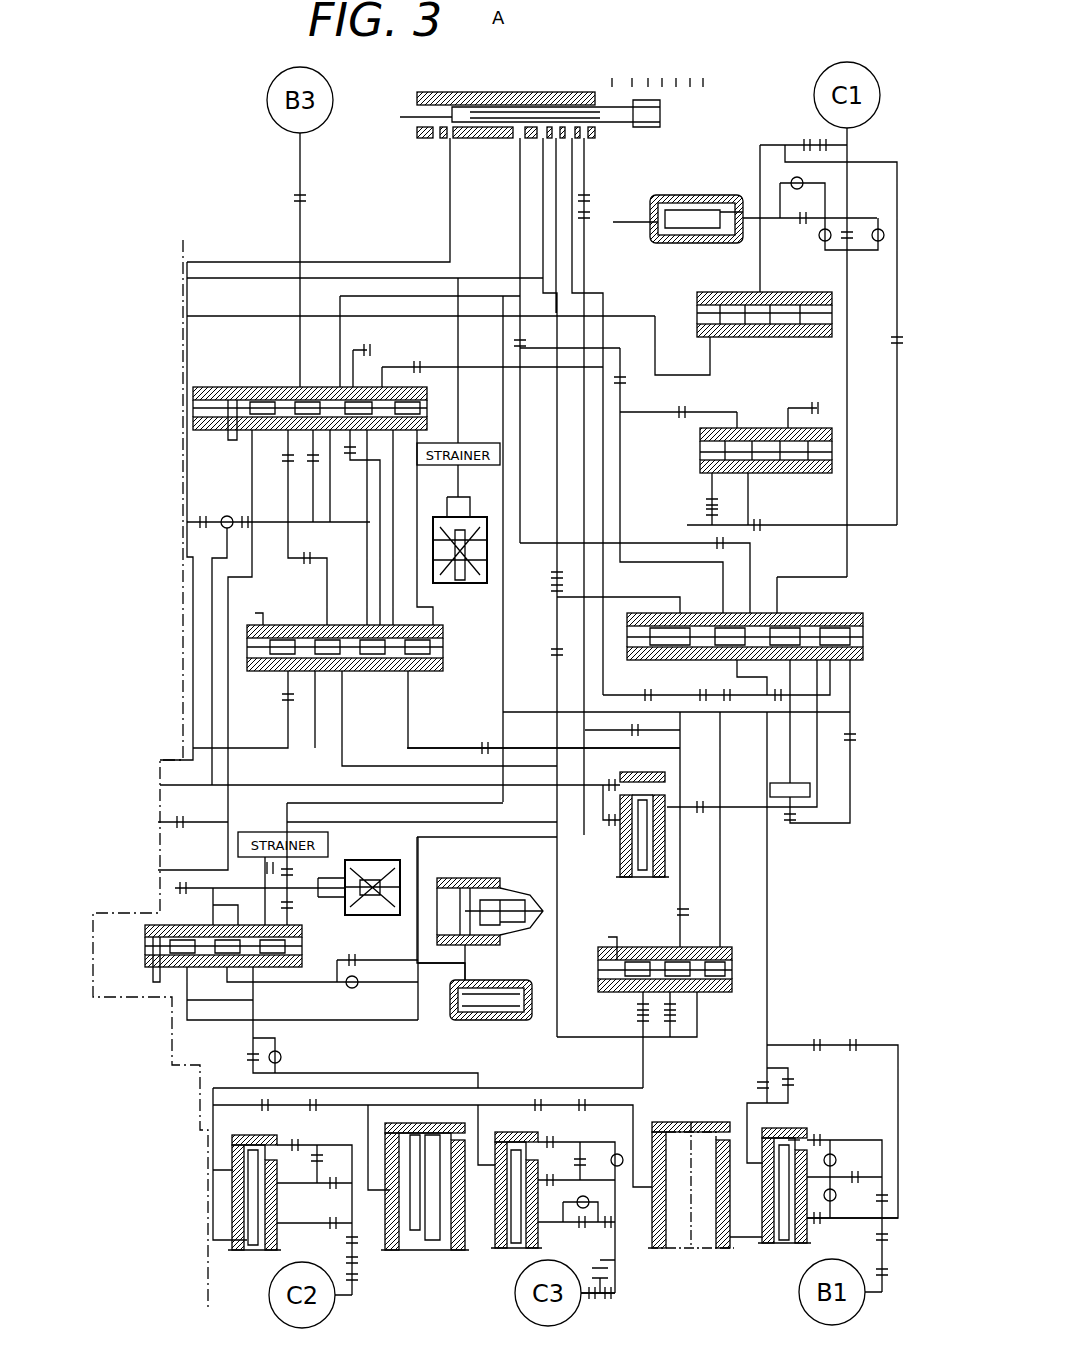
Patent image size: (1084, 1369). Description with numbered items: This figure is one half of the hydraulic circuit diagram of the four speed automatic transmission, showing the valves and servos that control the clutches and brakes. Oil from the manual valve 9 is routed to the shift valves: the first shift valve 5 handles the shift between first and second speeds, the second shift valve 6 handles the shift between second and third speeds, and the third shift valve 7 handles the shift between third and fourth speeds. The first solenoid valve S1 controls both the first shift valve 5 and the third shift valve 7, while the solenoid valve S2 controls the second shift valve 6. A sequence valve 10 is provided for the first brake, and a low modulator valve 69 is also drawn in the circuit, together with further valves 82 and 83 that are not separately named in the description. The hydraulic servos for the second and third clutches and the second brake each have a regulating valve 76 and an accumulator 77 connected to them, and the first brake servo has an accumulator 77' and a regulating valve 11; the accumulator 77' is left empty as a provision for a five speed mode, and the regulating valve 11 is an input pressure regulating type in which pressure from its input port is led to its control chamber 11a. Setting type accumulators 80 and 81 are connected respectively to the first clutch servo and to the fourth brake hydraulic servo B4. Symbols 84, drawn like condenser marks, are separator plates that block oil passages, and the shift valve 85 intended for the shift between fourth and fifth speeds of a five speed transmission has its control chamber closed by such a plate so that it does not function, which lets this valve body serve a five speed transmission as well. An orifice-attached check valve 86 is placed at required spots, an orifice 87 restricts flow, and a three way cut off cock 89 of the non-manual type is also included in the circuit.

The 1-2 shift valve 5 is at (243, 378).
The 2-3 shift valve 6 is at (135, 950).
The 3-4 shift valve 7 is at (297, 613).
The manual valve 9 is at (512, 87).
The sequence valve 10 is at (627, 938).
The regulating valve 11 is at (782, 1257).
The control chamber 11a is at (793, 1130).
The low modulator valve 69 is at (670, 780).
The regulating valve 76 is at (250, 1260).
The accumulator 77 is at (425, 1215).
The accumulator 77' is at (691, 1215).
The setting type accumulator 80 is at (715, 193).
The setting type accumulator 81 is at (503, 1020).
The shift valve 82 is at (803, 338).
The shift valve 83 is at (810, 473).
The separator plate 84 is at (372, 350).
The 4-5 shift valve 85 is at (868, 623).
The orifice-attached check valve 86 is at (290, 1062).
The orifice 87 is at (592, 198).
The three way cut off cock 89 is at (228, 510).
The first solenoid valve S1 is at (473, 593).
The solenoid valve S2 is at (355, 858).
The hydraulic servo for the fourth brake B4 is at (522, 887).